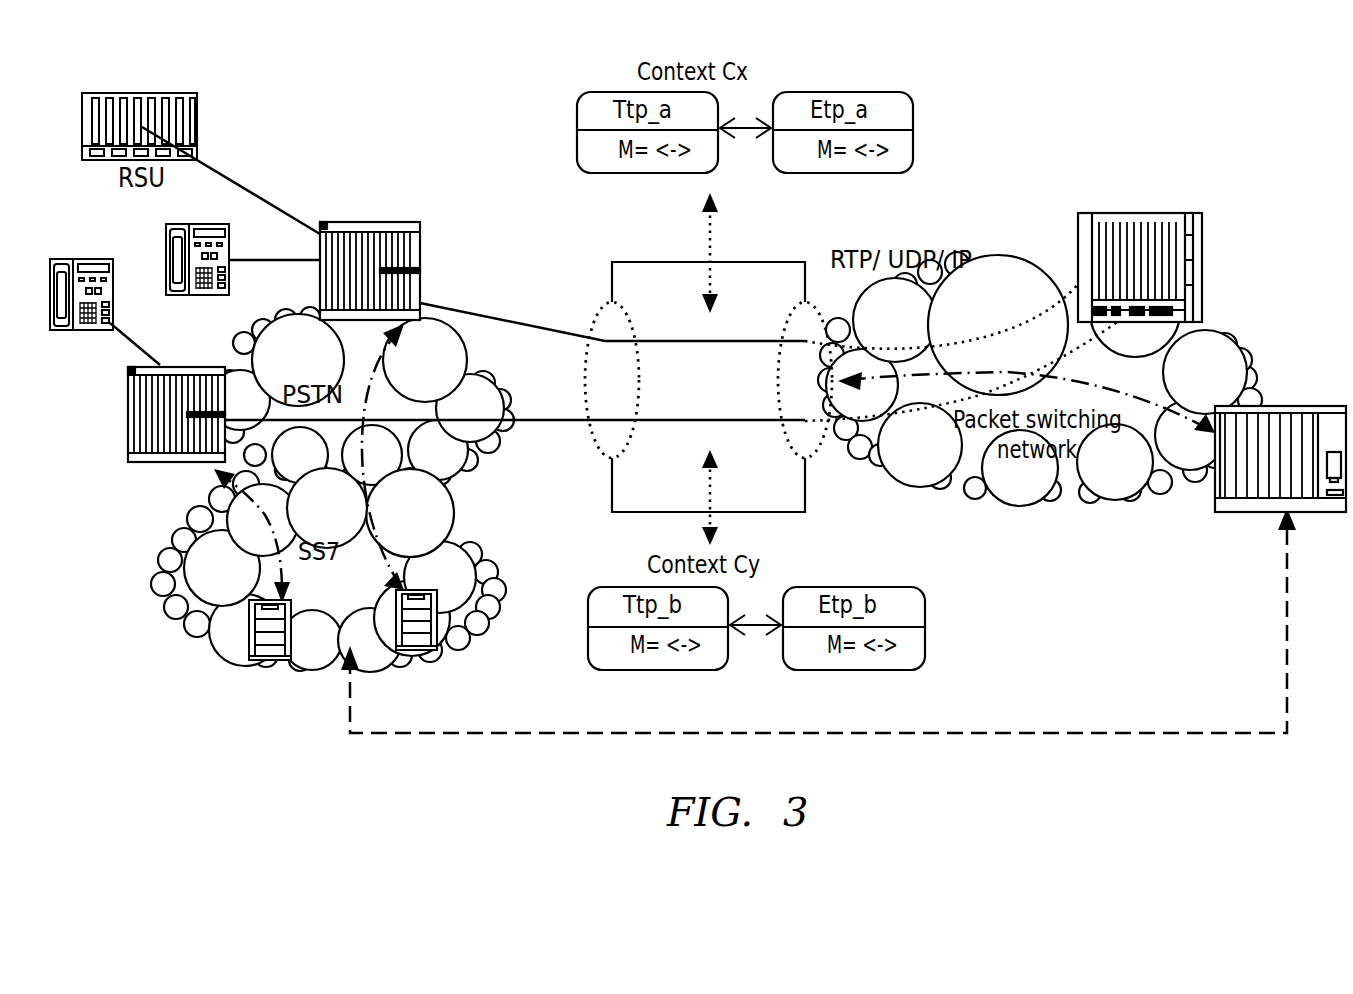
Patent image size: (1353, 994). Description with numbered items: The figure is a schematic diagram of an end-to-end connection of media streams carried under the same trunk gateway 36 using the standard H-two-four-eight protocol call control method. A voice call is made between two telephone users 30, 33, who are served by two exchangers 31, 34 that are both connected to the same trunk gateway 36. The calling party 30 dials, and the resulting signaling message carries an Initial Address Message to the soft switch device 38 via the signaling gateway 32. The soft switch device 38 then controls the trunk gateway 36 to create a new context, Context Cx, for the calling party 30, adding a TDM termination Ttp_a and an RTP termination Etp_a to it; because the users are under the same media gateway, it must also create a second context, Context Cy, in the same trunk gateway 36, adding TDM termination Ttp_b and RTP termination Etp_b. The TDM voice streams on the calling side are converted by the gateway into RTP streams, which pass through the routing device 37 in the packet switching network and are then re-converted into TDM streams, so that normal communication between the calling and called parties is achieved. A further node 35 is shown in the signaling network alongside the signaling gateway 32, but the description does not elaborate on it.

The telephone user 30 is at (77, 259).
The exchanger 31 is at (128, 412).
The signaling gateway 32 is at (269, 663).
The telephone user 33 is at (207, 296).
The exchanger 34 is at (373, 222).
The signaling gateway 35 is at (413, 653).
The trunk gateway 36 is at (770, 277).
The routing device 37 is at (1142, 213).
The soft switch device 38 is at (1291, 406).